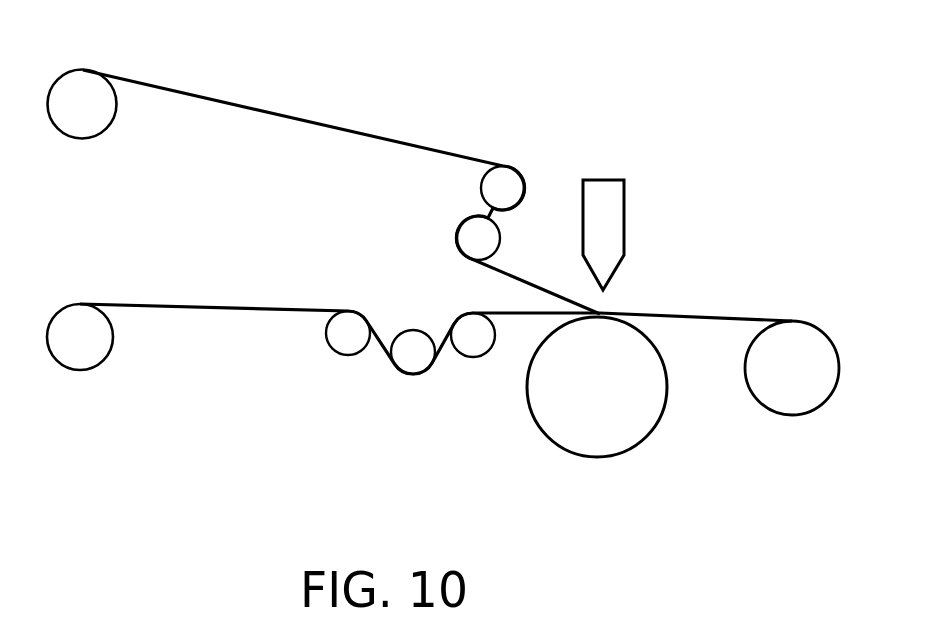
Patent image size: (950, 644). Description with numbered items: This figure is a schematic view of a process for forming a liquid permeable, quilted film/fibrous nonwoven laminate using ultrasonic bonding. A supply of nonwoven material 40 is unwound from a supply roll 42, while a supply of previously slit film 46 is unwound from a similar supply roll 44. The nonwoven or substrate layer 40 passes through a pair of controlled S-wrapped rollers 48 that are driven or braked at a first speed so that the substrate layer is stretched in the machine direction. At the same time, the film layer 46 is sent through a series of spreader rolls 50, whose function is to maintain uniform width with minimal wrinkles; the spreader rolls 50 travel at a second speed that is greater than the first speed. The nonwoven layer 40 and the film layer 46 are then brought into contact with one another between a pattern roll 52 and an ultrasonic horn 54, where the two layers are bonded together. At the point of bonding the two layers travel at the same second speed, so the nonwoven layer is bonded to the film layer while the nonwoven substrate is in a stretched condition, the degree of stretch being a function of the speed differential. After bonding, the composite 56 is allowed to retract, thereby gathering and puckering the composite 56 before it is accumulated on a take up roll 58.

The nonwoven material 40 is at (287, 115).
The supply roll 42 is at (68, 92).
The supply roll 44 is at (60, 340).
The slit film 46 is at (175, 302).
The S-wrapped rollers 48 is at (471, 208).
The spreader rolls 50 is at (392, 378).
The pattern roll 52 is at (613, 458).
The ultrasonic horn 54 is at (603, 178).
The composite 56 is at (682, 312).
The take up roll 58 is at (797, 404).